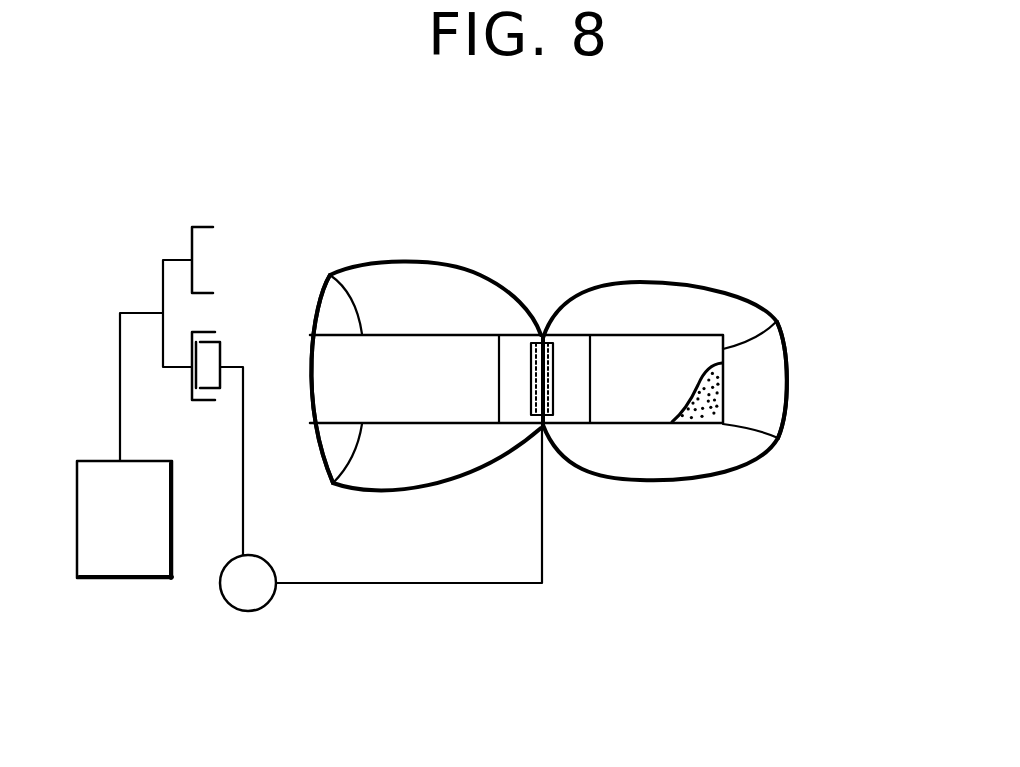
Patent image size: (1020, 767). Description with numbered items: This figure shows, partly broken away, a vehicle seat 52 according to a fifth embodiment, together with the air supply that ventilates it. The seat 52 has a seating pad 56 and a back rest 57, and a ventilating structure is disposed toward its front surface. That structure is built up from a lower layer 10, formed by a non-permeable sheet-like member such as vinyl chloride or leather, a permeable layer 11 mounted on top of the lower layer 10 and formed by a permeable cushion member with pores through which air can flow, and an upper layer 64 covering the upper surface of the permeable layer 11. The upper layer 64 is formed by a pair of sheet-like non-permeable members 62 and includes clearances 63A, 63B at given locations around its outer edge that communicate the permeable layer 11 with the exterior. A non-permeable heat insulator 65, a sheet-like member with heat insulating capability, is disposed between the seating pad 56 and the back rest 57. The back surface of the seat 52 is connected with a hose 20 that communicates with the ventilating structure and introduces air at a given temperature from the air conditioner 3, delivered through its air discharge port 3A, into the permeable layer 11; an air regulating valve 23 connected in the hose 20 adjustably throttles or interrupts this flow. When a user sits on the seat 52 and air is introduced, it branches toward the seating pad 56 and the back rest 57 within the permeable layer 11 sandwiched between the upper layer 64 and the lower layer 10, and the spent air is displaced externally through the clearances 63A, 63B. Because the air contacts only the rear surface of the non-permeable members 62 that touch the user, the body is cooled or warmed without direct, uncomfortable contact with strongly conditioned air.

The air conditioner 3 is at (130, 579).
The air discharge port 3A is at (193, 378).
The lower layer 10 is at (718, 398).
The permeable layer 11 is at (703, 393).
The hose 20 is at (397, 583).
The air regulating valve 23 is at (267, 600).
The vehicle seat 52 is at (325, 207).
The seating pad 56 is at (480, 458).
The back rest 57 is at (732, 440).
The non-permeable member 62 is at (462, 343).
The clearance 63A is at (307, 358).
The clearance 63B is at (783, 335).
The upper layer 64 is at (556, 273).
The heat insulator 65 is at (567, 347).